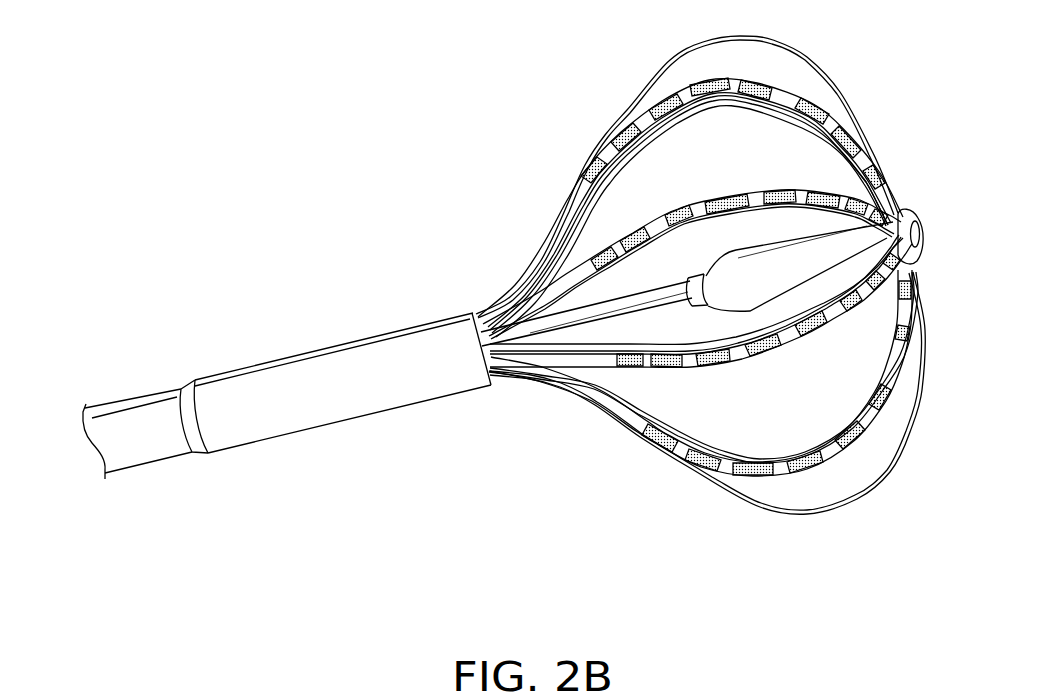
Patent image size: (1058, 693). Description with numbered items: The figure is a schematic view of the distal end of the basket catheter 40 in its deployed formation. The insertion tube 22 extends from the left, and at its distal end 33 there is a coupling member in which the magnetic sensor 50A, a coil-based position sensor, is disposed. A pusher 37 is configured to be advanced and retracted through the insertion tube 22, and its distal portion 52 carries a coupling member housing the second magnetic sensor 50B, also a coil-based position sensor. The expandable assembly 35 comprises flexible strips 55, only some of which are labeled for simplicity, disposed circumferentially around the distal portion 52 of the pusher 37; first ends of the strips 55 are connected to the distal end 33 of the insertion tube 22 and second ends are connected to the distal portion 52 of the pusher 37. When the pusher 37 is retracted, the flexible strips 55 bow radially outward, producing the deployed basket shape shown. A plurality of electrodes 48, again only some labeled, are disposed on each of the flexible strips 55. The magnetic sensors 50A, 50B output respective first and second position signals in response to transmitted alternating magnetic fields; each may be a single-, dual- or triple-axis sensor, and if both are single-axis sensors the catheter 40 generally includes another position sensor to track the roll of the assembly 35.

The insertion tube 22 is at (133, 403).
The magnetic sensor 50A is at (318, 352).
The distal end 33 is at (427, 387).
The basket catheter 40 is at (446, 283).
The assembly 35 is at (870, 89).
The flexible strips 55 is at (652, 145).
The distal portion 52 is at (647, 303).
The electrodes 48 is at (727, 197).
The pusher 37 is at (610, 317).
The magnetic sensor 50B is at (742, 287).